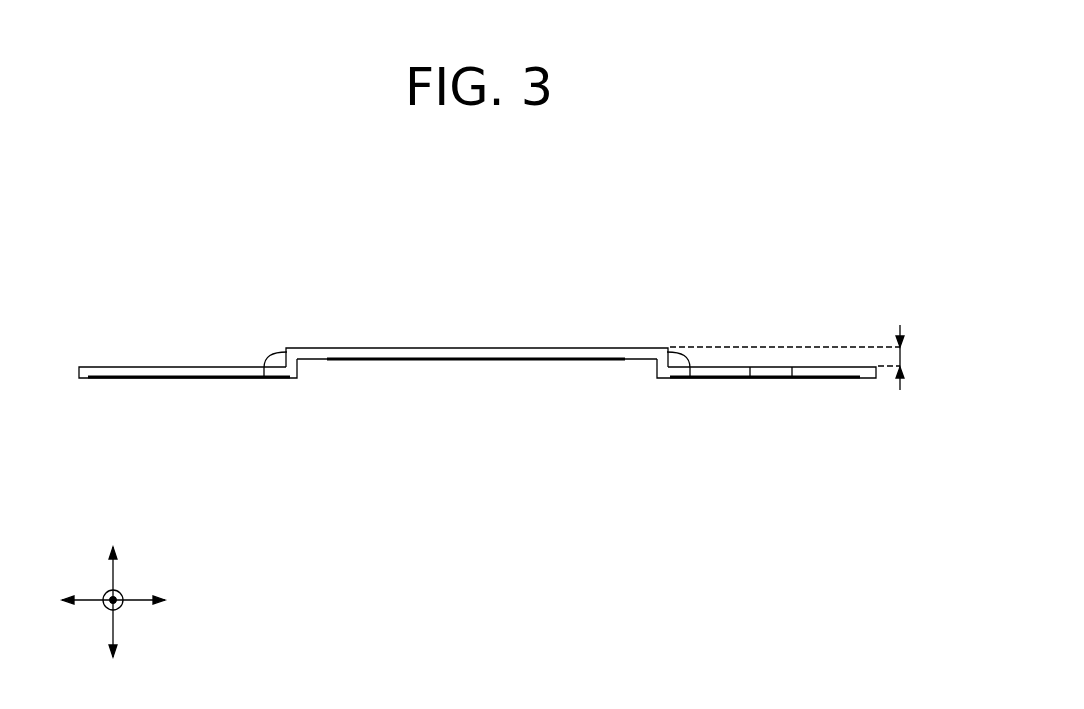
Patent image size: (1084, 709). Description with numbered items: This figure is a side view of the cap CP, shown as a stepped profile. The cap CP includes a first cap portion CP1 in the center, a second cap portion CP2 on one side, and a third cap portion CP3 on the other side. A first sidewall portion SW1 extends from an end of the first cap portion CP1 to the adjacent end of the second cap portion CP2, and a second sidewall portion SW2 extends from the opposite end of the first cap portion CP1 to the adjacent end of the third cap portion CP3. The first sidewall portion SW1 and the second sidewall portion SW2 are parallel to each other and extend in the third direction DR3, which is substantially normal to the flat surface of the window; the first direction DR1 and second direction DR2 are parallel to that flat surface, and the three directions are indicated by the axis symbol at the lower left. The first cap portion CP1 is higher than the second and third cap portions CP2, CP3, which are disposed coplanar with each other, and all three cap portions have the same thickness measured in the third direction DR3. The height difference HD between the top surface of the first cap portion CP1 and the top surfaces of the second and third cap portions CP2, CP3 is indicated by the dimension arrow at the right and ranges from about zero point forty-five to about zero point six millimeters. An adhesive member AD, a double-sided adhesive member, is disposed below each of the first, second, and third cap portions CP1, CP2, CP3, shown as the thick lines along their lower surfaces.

The cap CP is at (825, 240).
The first cap portion CP1 is at (452, 348).
The second cap portion CP2 is at (84, 380).
The third cap portion CP3 is at (865, 380).
The adhesive member AD is at (503, 359).
The first sidewall portion SW1 is at (264, 378).
The second sidewall portion SW2 is at (690, 378).
The height difference HD is at (903, 357).
The first direction DR1 is at (133, 599).
The second direction DR2 is at (120, 607).
The third direction DR3 is at (114, 586).